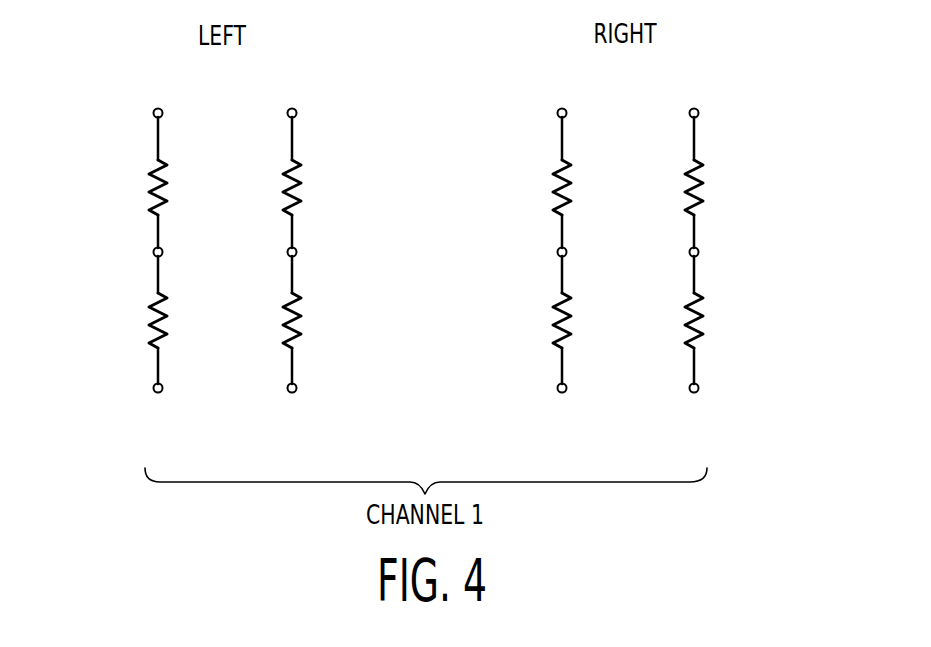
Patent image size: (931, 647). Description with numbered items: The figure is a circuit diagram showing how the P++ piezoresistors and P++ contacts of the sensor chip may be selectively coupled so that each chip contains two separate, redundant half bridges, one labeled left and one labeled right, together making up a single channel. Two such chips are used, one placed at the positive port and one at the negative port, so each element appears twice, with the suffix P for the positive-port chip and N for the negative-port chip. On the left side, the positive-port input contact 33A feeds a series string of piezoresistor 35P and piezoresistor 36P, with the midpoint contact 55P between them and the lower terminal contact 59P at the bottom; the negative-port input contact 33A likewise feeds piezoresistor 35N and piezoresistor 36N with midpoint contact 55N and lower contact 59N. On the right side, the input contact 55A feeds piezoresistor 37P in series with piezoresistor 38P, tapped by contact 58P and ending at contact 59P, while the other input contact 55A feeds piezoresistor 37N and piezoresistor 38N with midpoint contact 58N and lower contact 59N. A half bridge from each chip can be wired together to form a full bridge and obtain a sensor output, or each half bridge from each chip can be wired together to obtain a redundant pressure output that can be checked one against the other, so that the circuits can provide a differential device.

The P++ contact 33A is at (155, 100).
The P++ contact 55A is at (558, 105).
The P++ piezoresistor 35P is at (150, 188).
The P++ piezoresistor 35N is at (300, 190).
The P++ piezoresistor 36P is at (150, 318).
The P++ piezoresistor 36N is at (300, 320).
The P++ piezoresistor 37P is at (553, 184).
The P++ piezoresistor 37N is at (702, 176).
The P++ piezoresistor 38P is at (553, 316).
The P++ piezoresistor 38N is at (702, 318).
The P++ contact 55P is at (153, 252).
The P++ contact 55N is at (297, 252).
The P++ contact 58P is at (557, 252).
The P++ contact 58N is at (699, 252).
The P++ contact 59P is at (165, 398).
The P++ contact 59N is at (299, 398).